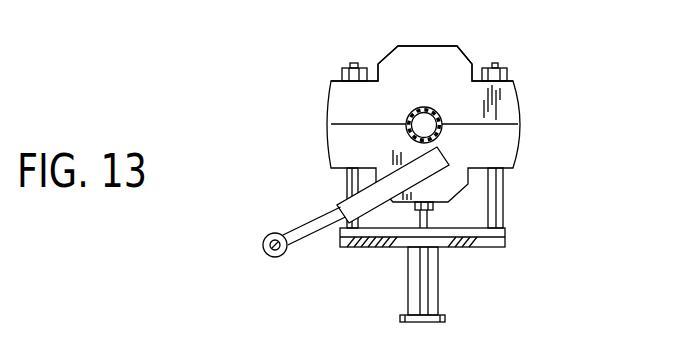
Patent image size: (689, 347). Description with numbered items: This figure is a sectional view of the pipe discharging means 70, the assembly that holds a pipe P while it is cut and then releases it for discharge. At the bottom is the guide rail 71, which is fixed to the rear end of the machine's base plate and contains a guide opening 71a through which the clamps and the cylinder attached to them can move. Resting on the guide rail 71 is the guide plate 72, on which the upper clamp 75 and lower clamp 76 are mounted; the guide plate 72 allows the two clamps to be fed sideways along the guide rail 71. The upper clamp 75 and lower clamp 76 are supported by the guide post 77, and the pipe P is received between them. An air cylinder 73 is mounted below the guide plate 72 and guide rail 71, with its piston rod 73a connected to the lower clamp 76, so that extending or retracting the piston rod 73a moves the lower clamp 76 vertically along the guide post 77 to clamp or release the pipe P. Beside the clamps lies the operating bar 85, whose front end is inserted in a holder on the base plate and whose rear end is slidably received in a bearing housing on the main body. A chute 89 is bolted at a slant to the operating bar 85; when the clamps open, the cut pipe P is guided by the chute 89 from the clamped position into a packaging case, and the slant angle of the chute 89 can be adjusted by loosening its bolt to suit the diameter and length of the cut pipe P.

The pipe discharging means 70 is at (532, 170).
The guide rail 71 is at (356, 248).
The guide opening 71a is at (402, 248).
The guide plate 72 is at (442, 265).
The air cylinder 73 is at (440, 302).
The piston rod 73a is at (429, 228).
The upper clamp 75 is at (512, 98).
The lower clamp 76 is at (520, 152).
The guide post 77 is at (503, 204).
The operating bar 85 is at (273, 258).
The chute 89 is at (343, 202).
The pipe P is at (428, 107).